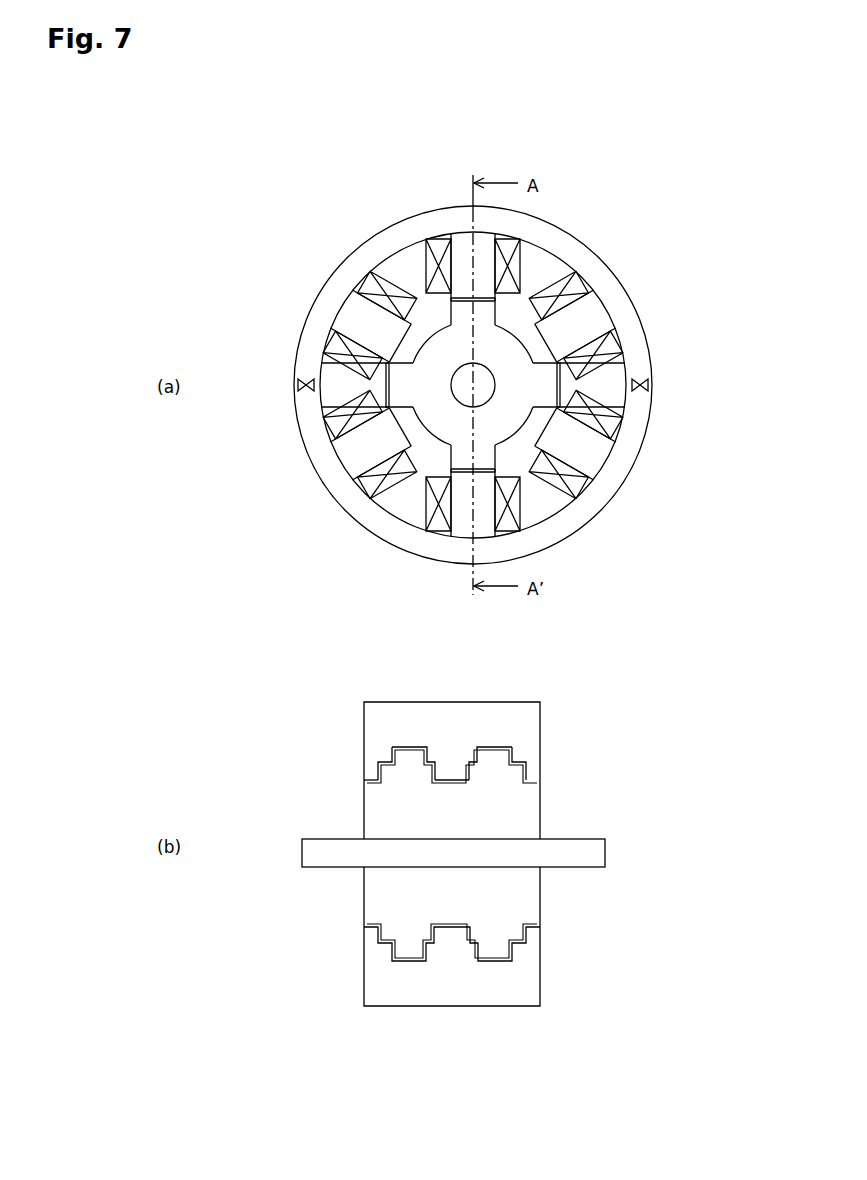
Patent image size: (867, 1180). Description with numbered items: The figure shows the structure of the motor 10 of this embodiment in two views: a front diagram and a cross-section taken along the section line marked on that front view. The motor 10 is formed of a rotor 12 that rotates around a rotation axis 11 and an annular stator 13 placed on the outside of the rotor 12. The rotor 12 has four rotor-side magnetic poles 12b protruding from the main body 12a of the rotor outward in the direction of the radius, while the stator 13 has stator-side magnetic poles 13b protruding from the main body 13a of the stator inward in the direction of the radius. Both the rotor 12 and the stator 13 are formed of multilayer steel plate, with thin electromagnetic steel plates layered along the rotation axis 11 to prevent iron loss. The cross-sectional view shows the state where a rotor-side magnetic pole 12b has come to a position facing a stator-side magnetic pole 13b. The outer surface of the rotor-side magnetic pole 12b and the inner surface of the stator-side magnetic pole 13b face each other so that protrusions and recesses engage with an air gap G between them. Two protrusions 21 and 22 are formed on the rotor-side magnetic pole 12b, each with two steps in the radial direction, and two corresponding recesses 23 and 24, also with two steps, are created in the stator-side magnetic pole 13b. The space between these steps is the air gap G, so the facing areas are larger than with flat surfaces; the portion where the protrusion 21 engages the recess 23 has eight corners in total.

The motor 10 is at (508, 595).
The rotation axis 11 is at (485, 387).
The rotor 12 is at (420, 595).
The main body of the rotor 12a is at (440, 360).
The rotor-side magnetic pole 12b is at (462, 318).
The stator 13 is at (538, 385).
The main body of the stator 13a is at (637, 408).
The stator-side magnetic pole 13b is at (578, 443).
The protrusion 21 is at (398, 762).
The protrusion 22 is at (503, 762).
The recess 23 is at (410, 742).
The recess 24 is at (495, 742).
The air gap G is at (362, 775).